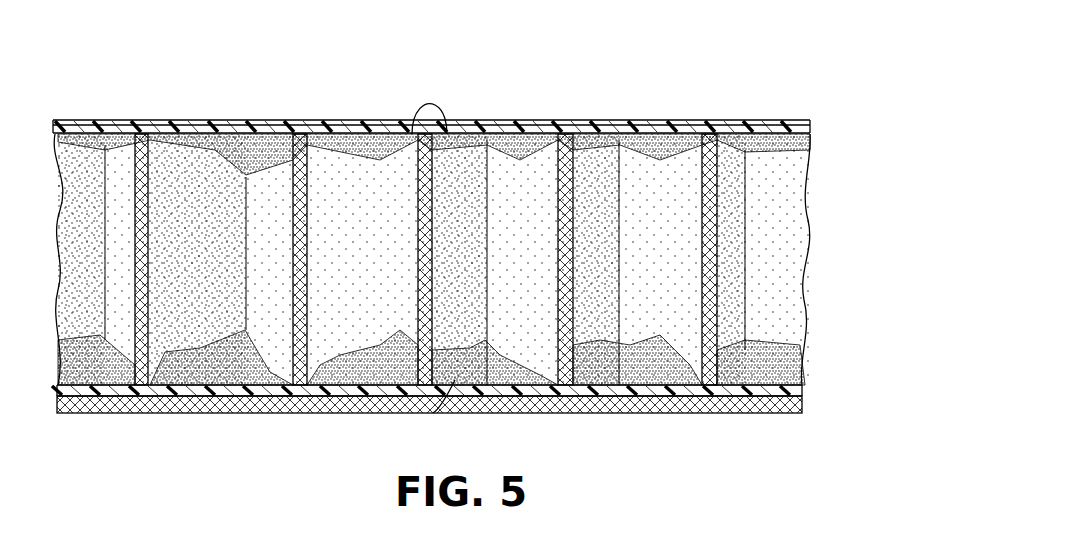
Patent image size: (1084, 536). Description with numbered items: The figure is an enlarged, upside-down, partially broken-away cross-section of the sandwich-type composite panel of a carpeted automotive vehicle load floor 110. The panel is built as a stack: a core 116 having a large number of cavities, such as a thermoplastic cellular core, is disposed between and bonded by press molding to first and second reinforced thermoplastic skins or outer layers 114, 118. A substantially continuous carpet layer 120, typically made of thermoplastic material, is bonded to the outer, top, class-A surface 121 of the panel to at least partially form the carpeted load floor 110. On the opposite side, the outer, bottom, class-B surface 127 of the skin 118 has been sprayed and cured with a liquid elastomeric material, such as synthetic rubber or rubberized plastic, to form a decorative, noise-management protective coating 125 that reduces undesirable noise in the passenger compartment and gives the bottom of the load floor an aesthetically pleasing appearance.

The load floor 110 is at (640, 70).
The protective coating 125 is at (810, 121).
The second outer layer 118 is at (810, 130).
The core 116 is at (800, 270).
The bottom surface 127 is at (412, 134).
The class-A surface 121 is at (455, 380).
The first outer layer 114 is at (802, 391).
The carpet layer 120 is at (803, 408).